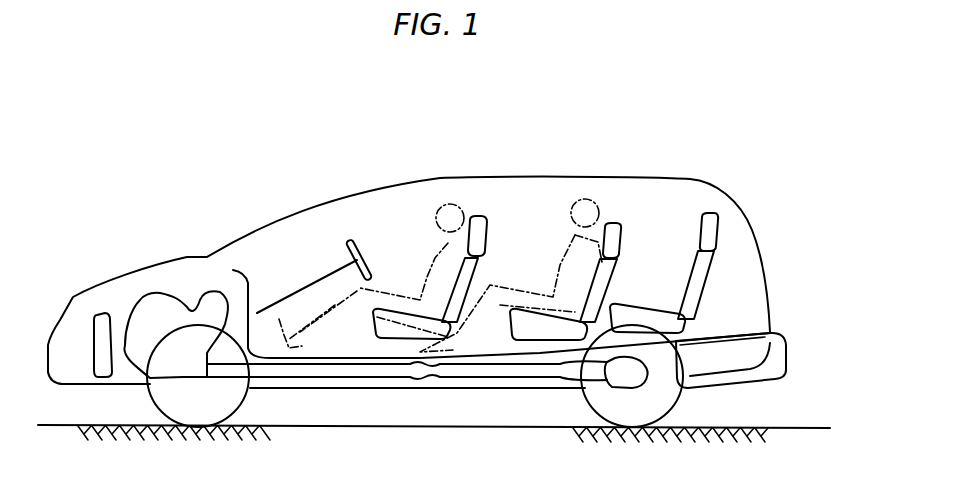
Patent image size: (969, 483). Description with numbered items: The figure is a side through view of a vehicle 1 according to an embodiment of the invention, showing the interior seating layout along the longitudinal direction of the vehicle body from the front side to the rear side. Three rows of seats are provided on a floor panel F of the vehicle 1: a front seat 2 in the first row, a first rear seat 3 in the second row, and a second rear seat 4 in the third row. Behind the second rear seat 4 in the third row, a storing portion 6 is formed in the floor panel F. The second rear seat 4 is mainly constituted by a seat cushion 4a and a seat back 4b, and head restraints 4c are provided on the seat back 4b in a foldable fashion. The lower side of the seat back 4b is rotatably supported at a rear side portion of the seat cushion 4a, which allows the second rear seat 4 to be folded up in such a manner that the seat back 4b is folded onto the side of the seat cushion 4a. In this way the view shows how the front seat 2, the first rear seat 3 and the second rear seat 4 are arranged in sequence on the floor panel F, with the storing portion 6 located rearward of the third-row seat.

The vehicle 1 is at (563, 148).
The front seat 2 is at (485, 265).
The first rear seat 3 is at (602, 275).
The second rear seat 4 is at (684, 258).
The seat cushion 4a is at (613, 307).
The seat back 4b is at (703, 275).
The head restraints 4c is at (702, 222).
The storing portion 6 is at (786, 340).
The floor panel F is at (547, 347).